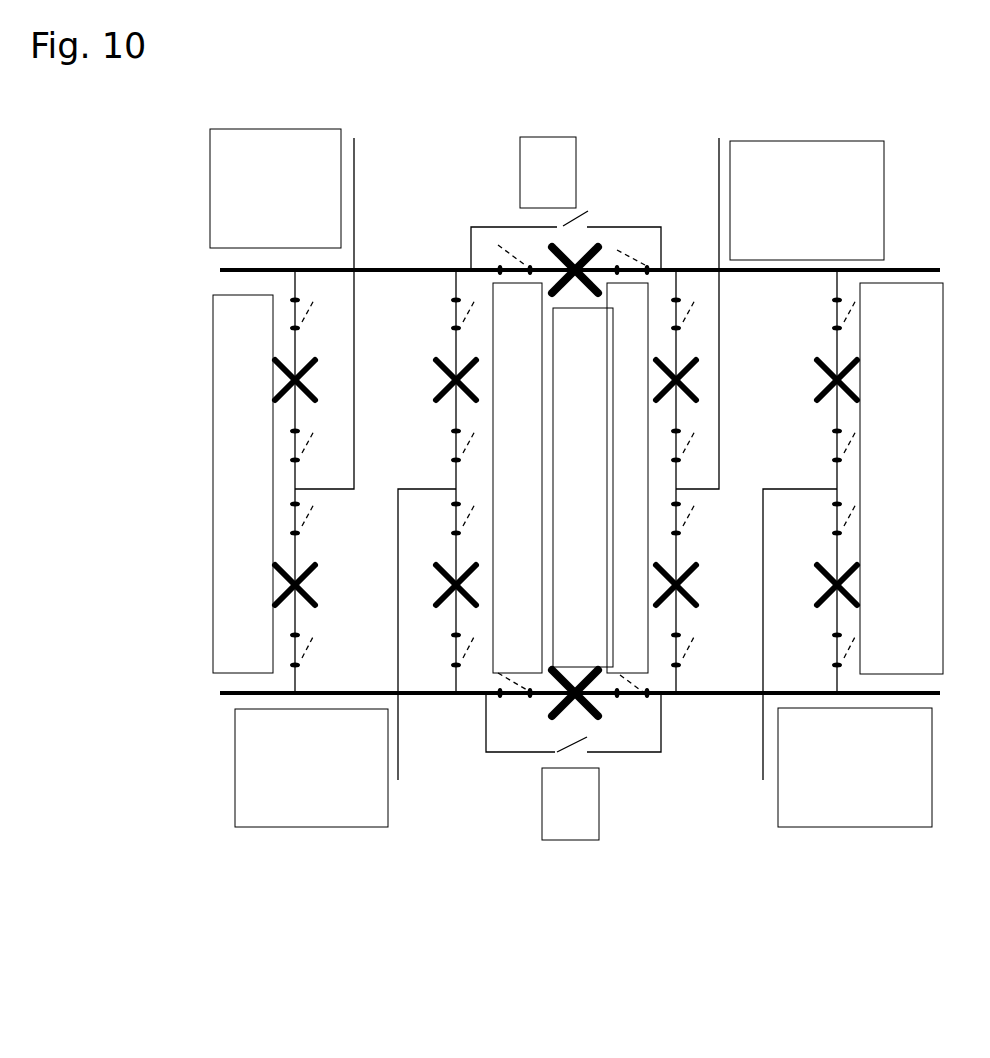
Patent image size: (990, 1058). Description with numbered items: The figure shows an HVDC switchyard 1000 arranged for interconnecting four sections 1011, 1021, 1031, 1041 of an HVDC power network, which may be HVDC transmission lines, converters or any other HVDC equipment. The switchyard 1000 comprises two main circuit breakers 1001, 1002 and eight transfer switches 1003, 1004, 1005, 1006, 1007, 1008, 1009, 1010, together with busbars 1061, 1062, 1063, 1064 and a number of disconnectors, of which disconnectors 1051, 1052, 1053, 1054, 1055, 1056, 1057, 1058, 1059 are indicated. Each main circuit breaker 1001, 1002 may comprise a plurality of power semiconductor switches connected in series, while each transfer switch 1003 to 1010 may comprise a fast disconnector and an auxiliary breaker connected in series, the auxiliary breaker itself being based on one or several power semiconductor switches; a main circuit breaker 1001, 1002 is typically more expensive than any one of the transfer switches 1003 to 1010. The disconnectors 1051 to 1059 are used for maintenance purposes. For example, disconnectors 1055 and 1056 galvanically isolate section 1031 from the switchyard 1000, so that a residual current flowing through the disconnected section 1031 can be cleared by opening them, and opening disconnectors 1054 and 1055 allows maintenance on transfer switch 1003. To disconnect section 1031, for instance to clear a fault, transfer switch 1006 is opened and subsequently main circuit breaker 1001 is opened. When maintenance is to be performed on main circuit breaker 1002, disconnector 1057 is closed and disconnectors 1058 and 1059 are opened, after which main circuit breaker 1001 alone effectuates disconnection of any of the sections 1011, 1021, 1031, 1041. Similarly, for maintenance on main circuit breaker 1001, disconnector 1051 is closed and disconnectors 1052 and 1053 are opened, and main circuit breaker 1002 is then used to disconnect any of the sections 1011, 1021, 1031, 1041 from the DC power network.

The switchyard 1000 is at (240, 862).
The main circuit breaker 1001 is at (601, 710).
The main circuit breaker 1002 is at (572, 244).
The transfer switch 1003 is at (254, 380).
The transfer switch 1004 is at (254, 585).
The transfer switch 1005 is at (493, 380).
The transfer switch 1006 is at (493, 585).
The transfer switch 1007 is at (639, 380).
The transfer switch 1008 is at (639, 585).
The transfer switch 1009 is at (877, 380).
The transfer switch 1010 is at (877, 585).
The section 1011 is at (345, 658).
The section 1021 is at (847, 658).
The section 1031 is at (282, 309).
The section 1041 is at (780, 313).
The disconnector 1051 is at (579, 760).
The disconnector 1052 is at (504, 700).
The disconnector 1053 is at (638, 700).
The disconnector 1054 is at (260, 313).
The disconnector 1055 is at (260, 445).
The disconnector 1056 is at (260, 522).
The disconnector 1057 is at (579, 206).
The disconnector 1058 is at (502, 244).
The disconnector 1059 is at (637, 254).
The busbar 1061 is at (377, 717).
The busbar 1062 is at (774, 718).
The busbar 1063 is at (372, 248).
The busbar 1064 is at (774, 248).